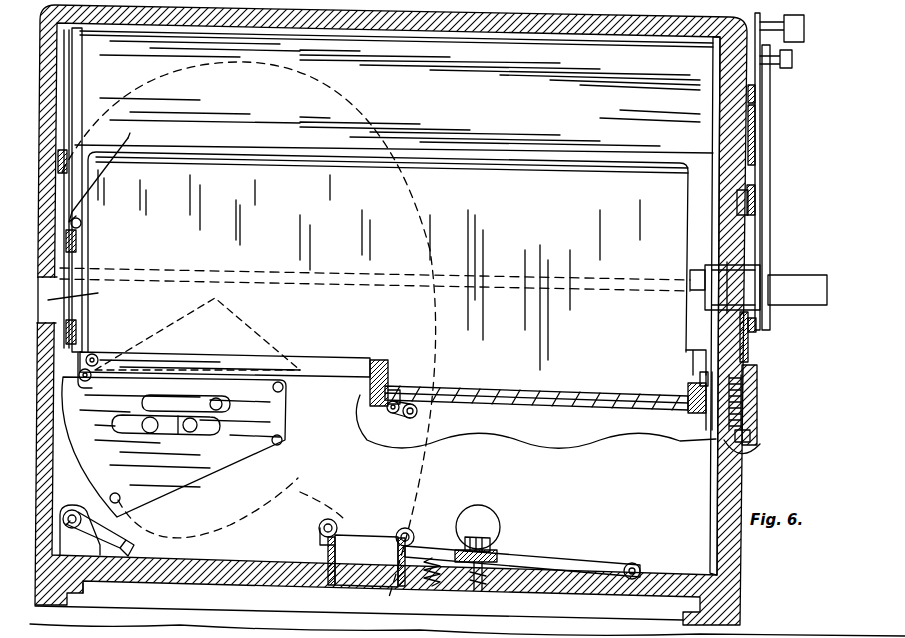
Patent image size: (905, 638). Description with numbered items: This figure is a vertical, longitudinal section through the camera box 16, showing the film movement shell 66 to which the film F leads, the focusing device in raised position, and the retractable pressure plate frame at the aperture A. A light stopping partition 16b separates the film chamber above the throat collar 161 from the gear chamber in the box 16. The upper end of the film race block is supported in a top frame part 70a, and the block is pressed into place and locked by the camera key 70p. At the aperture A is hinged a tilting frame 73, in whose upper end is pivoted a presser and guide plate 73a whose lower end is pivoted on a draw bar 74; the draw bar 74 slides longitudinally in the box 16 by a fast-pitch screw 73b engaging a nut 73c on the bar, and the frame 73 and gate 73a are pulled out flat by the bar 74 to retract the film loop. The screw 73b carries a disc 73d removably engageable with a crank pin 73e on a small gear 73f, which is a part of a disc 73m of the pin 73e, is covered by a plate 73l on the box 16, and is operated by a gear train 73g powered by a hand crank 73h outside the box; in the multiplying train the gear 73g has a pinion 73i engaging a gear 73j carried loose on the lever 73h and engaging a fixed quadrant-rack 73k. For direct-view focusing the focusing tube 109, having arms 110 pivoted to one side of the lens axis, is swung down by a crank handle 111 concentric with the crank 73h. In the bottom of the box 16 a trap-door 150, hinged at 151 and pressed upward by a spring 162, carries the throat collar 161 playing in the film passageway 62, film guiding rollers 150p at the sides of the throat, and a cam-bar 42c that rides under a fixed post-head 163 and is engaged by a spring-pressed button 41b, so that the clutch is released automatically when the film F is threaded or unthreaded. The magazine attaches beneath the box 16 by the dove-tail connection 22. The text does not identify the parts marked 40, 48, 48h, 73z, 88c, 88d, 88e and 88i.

The camera box 16 is at (730, 156).
The light stopping partition 16b is at (506, 193).
The dove-tail connection 22 is at (690, 605).
The bracket 40 is at (93, 517).
The button 41b is at (498, 496).
The cam-bar 42c is at (495, 548).
The shaft 48 is at (604, 275).
The shaft hub 48h is at (766, 287).
The film passageway 62 is at (290, 596).
The movement shell 66 is at (283, 430).
The top frame part 70a is at (118, 142).
The camera key 70p is at (78, 560).
The tilting frame 73 is at (82, 348).
The presser and guide plate 73a is at (80, 258).
The fast-pitch screw 73b is at (520, 380).
The nut 73c is at (380, 362).
The disc 73d is at (700, 375).
The crank pin 73e is at (702, 350).
The small gear 73f is at (758, 395).
The gear train 73g is at (748, 340).
The hand crank 73h is at (758, 70).
The pinion 73i is at (756, 328).
The gear 73j is at (752, 210).
The quadrant-rack 73k is at (752, 98).
The plate 73l is at (750, 436).
The disc 73m is at (752, 456).
The roller 73z is at (405, 418).
The draw bar 74 is at (186, 360).
The pin 88c is at (148, 418).
The slot 88d is at (180, 428).
The pin 88e is at (135, 428).
The slot 88i is at (188, 400).
The focusing tube 109 is at (500, 120).
The arms 110 is at (75, 80).
The crank handle 111 is at (768, 250).
The trap-door 150 is at (572, 562).
The film guiding rollers 150p is at (332, 520).
The hinge 151 is at (634, 563).
The throat collar 161 is at (372, 575).
The spring 162 is at (436, 575).
The post-head 163 is at (466, 536).
The aperture A is at (82, 291).
The film F is at (291, 470).